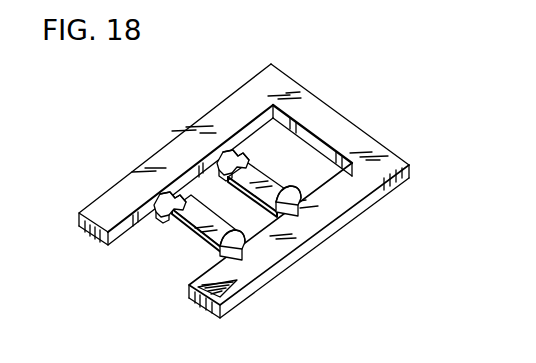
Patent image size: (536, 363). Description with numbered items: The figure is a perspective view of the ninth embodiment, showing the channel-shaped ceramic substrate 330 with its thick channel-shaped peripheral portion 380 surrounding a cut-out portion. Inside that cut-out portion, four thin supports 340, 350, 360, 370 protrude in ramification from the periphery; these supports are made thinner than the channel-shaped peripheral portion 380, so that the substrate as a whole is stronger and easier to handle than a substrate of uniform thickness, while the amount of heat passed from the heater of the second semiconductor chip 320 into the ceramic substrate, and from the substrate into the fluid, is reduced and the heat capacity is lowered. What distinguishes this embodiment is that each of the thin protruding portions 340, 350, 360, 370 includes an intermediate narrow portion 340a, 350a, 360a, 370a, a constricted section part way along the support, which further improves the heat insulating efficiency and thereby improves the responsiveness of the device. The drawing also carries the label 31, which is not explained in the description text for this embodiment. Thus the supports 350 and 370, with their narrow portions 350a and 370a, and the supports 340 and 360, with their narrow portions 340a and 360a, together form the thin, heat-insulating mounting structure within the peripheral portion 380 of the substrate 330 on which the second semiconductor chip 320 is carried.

The ceramic substrate 330 is at (302, 90).
The channel-shaped peripheral portion 380 is at (333, 121).
The second semiconductor chip 320 is at (268, 184).
The spring plate 31 is at (212, 238).
The support 350 is at (218, 148).
The intermediate narrow portion 350a is at (233, 148).
The support 370 is at (160, 191).
The intermediate narrow portion 370a is at (163, 209).
The support 340 is at (318, 233).
The intermediate narrow portion 340a is at (300, 191).
The support 360 is at (242, 250).
The intermediate narrow portion 360a is at (233, 248).